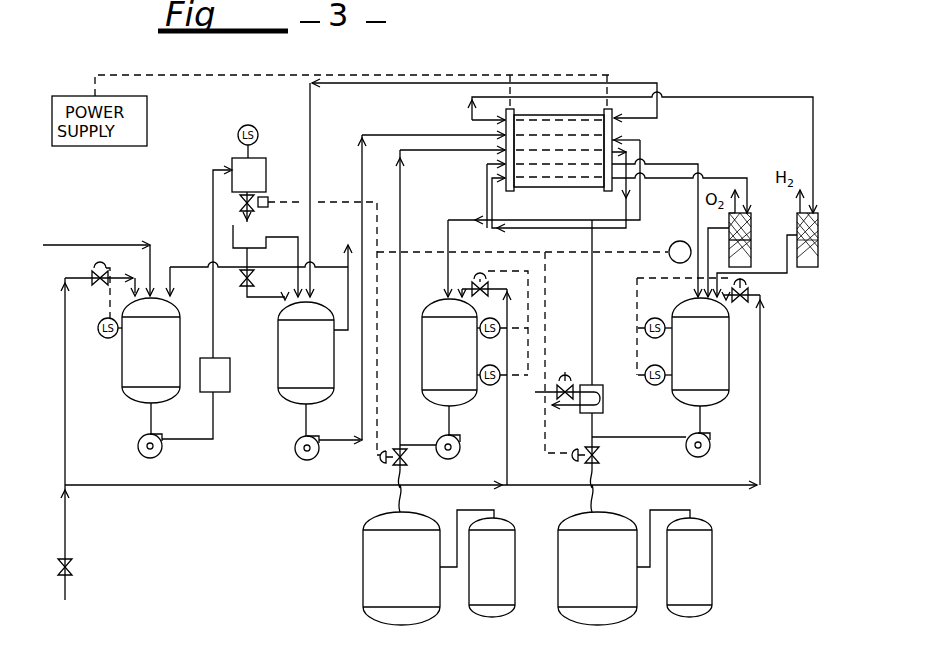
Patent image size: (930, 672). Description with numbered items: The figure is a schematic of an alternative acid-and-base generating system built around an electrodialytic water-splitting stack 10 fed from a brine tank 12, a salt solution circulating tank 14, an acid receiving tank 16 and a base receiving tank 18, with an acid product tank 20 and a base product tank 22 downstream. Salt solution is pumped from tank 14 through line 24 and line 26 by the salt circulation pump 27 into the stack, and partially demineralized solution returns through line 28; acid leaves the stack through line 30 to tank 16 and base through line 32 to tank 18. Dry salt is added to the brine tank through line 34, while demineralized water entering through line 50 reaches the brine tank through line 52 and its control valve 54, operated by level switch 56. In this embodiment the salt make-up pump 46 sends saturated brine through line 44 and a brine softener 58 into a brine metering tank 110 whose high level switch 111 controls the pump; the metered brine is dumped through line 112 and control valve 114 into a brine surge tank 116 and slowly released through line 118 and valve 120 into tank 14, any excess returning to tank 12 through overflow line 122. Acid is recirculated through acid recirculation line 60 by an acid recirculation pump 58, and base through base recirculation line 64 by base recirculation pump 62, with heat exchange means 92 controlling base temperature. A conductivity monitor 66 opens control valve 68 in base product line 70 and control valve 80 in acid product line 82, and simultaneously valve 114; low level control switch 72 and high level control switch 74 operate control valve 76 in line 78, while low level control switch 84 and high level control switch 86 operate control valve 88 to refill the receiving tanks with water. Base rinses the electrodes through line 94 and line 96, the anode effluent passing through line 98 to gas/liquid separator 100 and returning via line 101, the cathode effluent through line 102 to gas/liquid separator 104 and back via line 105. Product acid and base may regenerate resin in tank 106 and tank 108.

The electrodialytic water-splitting stack 10 is at (637, 137).
The brine tank 12 is at (122, 377).
The salt solution circulating tank 14 is at (300, 400).
The acid receiving tank 16 is at (430, 393).
The base receiving tank 18 is at (730, 375).
The acid product tank 20 is at (362, 583).
The base product tank 22 is at (606, 626).
The line 24 is at (362, 213).
The line 26 is at (398, 135).
The salt circulation pump 27 is at (302, 457).
The line 28 is at (311, 125).
The line 30 is at (450, 233).
The line 32 is at (697, 214).
The line 34 is at (151, 258).
The line 44 is at (214, 325).
The salt make-up pump 46 is at (153, 457).
The line 50 is at (66, 542).
The line 52 is at (67, 442).
The control valve 54 is at (99, 272).
The level switch 56 is at (100, 338).
The brine softener 58 is at (230, 393).
The acid recirculation line 60 is at (401, 290).
The base recirculation pump 62 is at (712, 430).
The base recirculation line 64 is at (487, 172).
The conductivity monitor 66 is at (668, 250).
The control valve 68 is at (595, 453).
The base product line 70 is at (588, 502).
The low level control switch 72 is at (650, 385).
The high level control switch 74 is at (652, 318).
The control valve 76 is at (740, 303).
The line 78 is at (762, 382).
The control valve 80 is at (392, 456).
The acid product line 82 is at (397, 502).
The low level control switch 84 is at (490, 385).
The high level control switch 86 is at (483, 302).
The control valve 88 is at (476, 283).
The heat exchange means 92 is at (597, 413).
The line 94 is at (492, 203).
The line 96 is at (645, 152).
The line 98 is at (704, 176).
The gas/liquid separator 100 is at (755, 231).
The line 101 is at (712, 264).
The line 102 is at (725, 97).
The gas/liquid separator 104 is at (808, 263).
The line 105 is at (780, 275).
The tank 106 is at (492, 613).
The tank 108 is at (712, 603).
The brine metering tank 110 is at (277, 177).
The high level switch 111 is at (253, 128).
The line 112 is at (245, 196).
The control valve 114 is at (244, 207).
The brine surge tank 116 is at (257, 233).
The line 118 is at (247, 257).
The valve 120 is at (245, 285).
The overflow line 122 is at (195, 270).